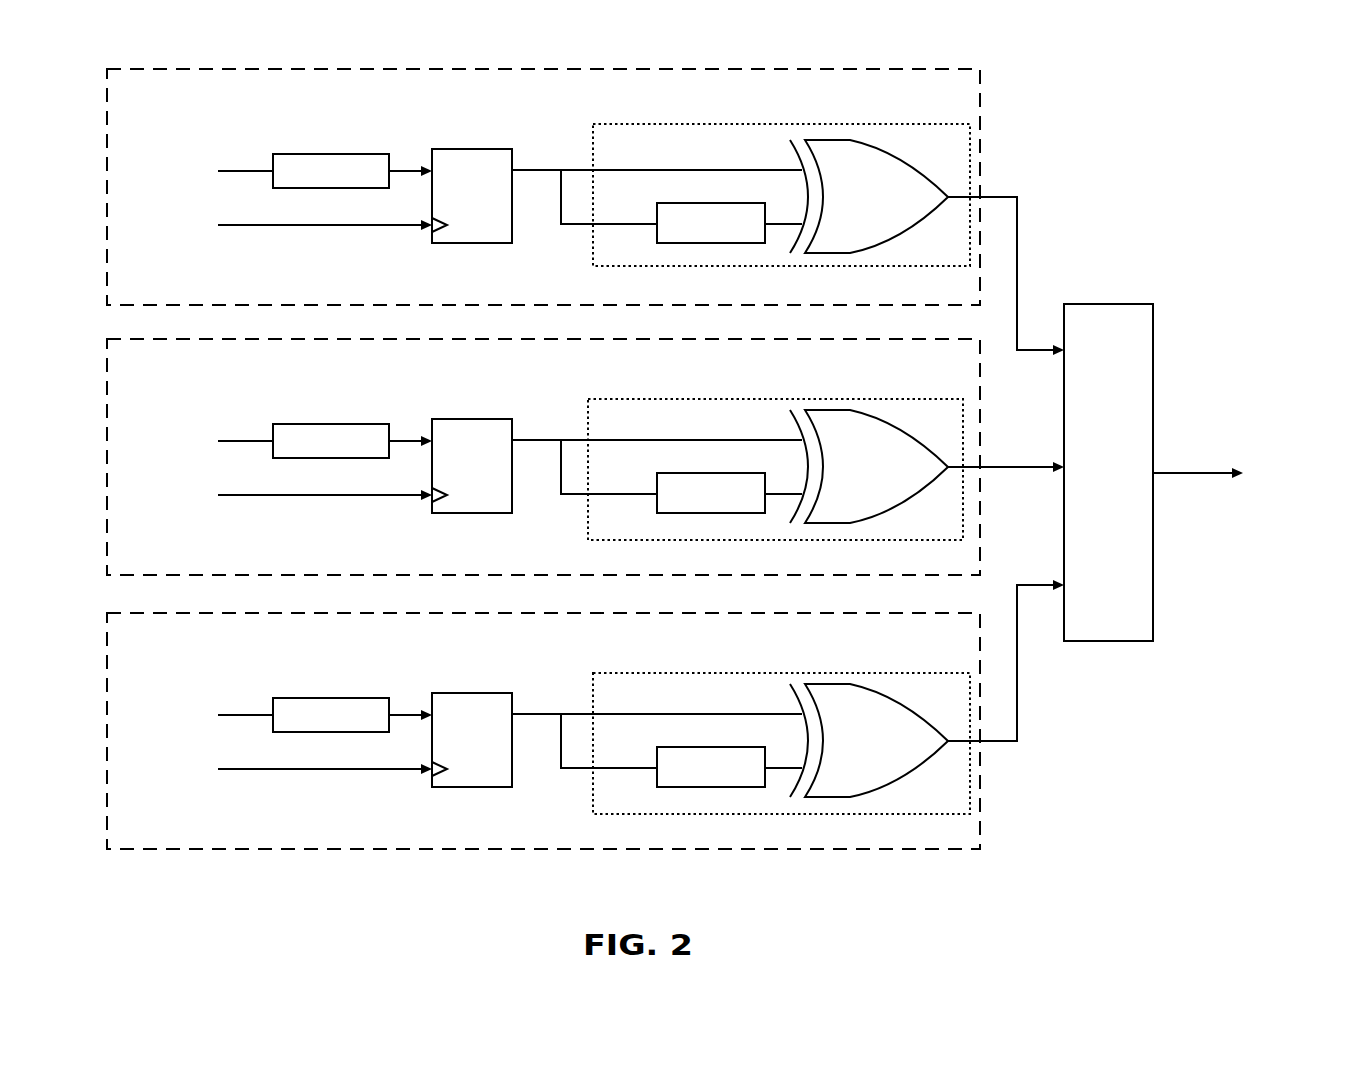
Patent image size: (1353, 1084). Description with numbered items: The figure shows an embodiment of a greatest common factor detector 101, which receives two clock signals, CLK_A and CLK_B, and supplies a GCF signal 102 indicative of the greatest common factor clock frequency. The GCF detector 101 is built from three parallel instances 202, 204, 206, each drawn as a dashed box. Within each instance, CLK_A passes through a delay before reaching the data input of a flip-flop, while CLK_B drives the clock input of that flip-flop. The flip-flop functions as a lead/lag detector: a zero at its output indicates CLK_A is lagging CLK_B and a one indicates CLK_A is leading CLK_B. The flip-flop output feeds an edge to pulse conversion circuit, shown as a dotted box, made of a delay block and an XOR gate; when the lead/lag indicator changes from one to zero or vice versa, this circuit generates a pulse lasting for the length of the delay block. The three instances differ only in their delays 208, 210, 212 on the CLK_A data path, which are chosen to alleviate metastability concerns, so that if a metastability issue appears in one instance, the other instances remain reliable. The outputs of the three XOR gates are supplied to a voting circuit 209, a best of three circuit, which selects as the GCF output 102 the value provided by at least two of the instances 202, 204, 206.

The greatest common factor detector 101 is at (1102, 131).
The GCF signal 102 is at (1183, 472).
The first instance 202 is at (962, 299).
The second instance 204 is at (543, 457).
The third instance 206 is at (543, 731).
The delay 208 is at (334, 153).
The voting circuit 209 is at (1105, 303).
The delay 210 is at (352, 406).
The delay 212 is at (352, 680).